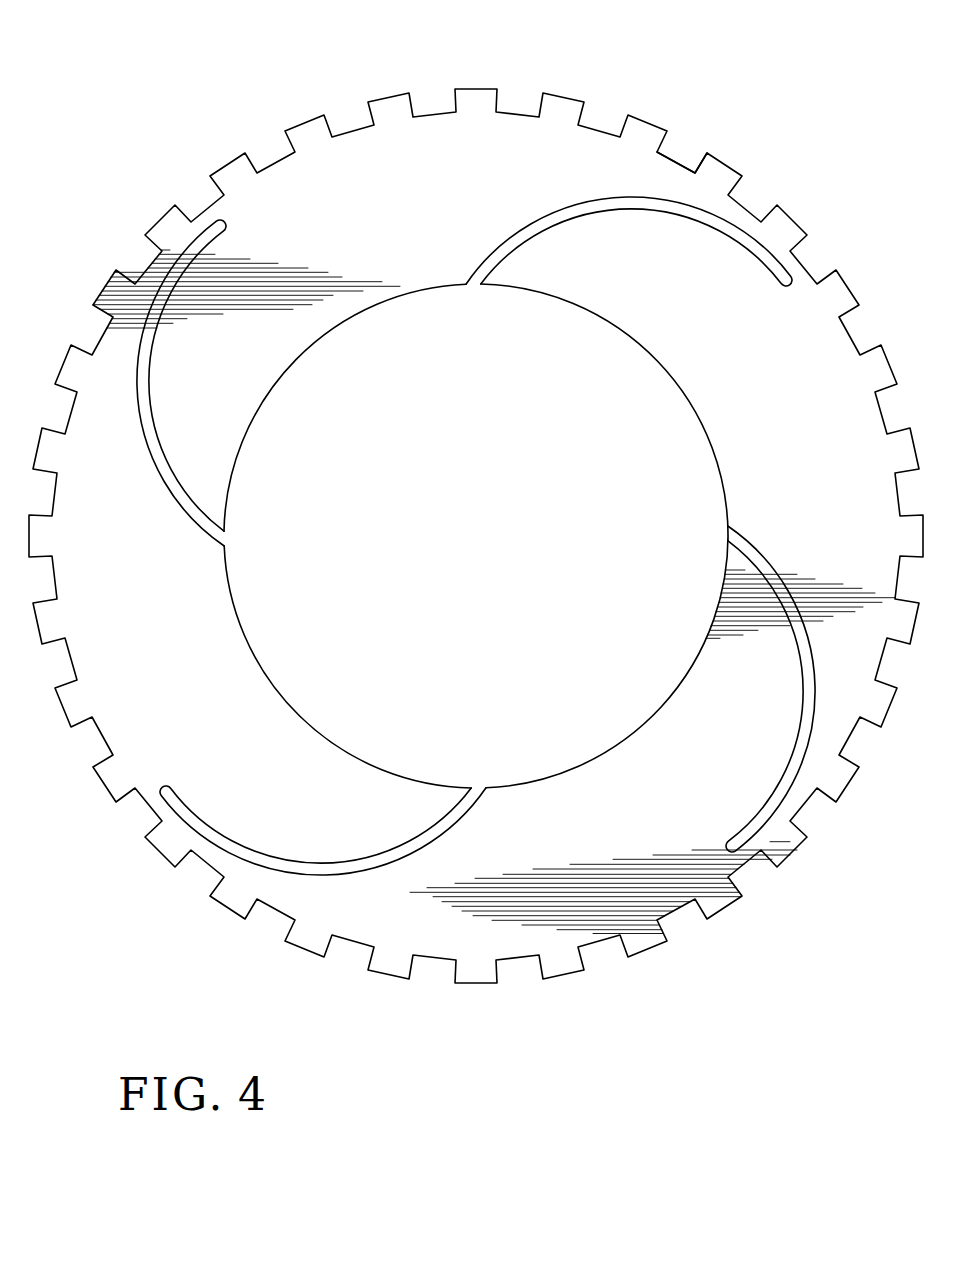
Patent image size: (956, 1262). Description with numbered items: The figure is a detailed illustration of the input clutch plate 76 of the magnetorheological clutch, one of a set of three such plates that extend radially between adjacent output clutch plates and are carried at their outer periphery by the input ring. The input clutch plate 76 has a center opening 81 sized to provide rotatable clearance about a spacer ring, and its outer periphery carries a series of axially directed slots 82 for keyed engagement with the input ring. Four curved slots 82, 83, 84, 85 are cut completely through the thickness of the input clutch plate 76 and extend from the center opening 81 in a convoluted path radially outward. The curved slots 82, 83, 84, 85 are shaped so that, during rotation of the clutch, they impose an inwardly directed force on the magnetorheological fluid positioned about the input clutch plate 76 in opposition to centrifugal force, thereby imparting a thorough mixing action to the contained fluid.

The input clutch plate 76 is at (650, 114).
The center opening 81 is at (620, 330).
The slot 82 is at (180, 503).
The curved slot 83 is at (550, 225).
The curved slot 84 is at (763, 557).
The curved slot 85 is at (390, 848).